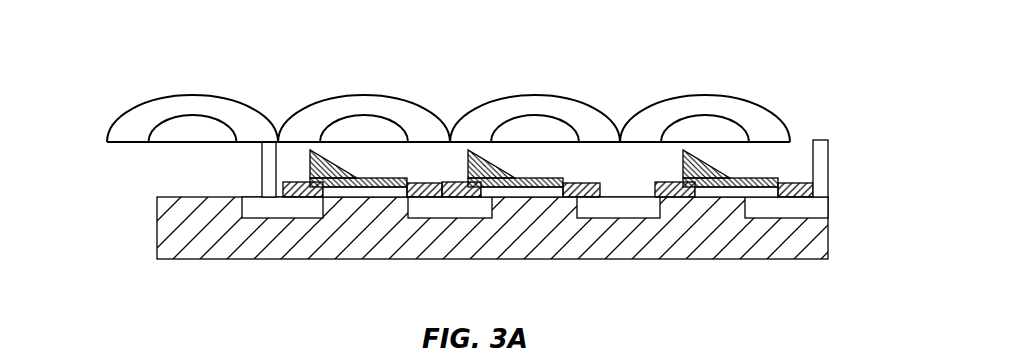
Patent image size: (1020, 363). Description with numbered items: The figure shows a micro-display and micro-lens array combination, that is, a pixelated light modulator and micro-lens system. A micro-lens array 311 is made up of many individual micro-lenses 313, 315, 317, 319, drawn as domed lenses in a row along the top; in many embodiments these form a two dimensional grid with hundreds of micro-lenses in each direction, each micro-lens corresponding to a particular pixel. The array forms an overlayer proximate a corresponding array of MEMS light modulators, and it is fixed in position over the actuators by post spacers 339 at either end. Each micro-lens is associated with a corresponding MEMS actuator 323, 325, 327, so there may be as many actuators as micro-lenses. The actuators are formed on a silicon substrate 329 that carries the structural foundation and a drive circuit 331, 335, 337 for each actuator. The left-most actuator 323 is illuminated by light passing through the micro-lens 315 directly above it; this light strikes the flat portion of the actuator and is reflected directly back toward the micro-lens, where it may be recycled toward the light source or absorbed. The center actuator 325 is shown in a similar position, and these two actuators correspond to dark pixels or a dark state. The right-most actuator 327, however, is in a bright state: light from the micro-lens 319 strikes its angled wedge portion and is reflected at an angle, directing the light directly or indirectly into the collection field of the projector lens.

The micro-lens array 311 is at (112, 52).
The micro-lens 313 is at (219, 96).
The micro-lens 315 is at (376, 96).
The micro-lens 317 is at (563, 98).
The micro-lens 319 is at (769, 107).
The MEMS actuator 323 is at (352, 170).
The MEMS actuator 325 is at (505, 171).
The MEMS actuator 327 is at (716, 170).
The silicon substrate 329 is at (830, 236).
The drive circuit 331 is at (423, 196).
The drive circuit 335 is at (455, 196).
The drive circuit 337 is at (800, 200).
The post spacer 339 is at (262, 162).